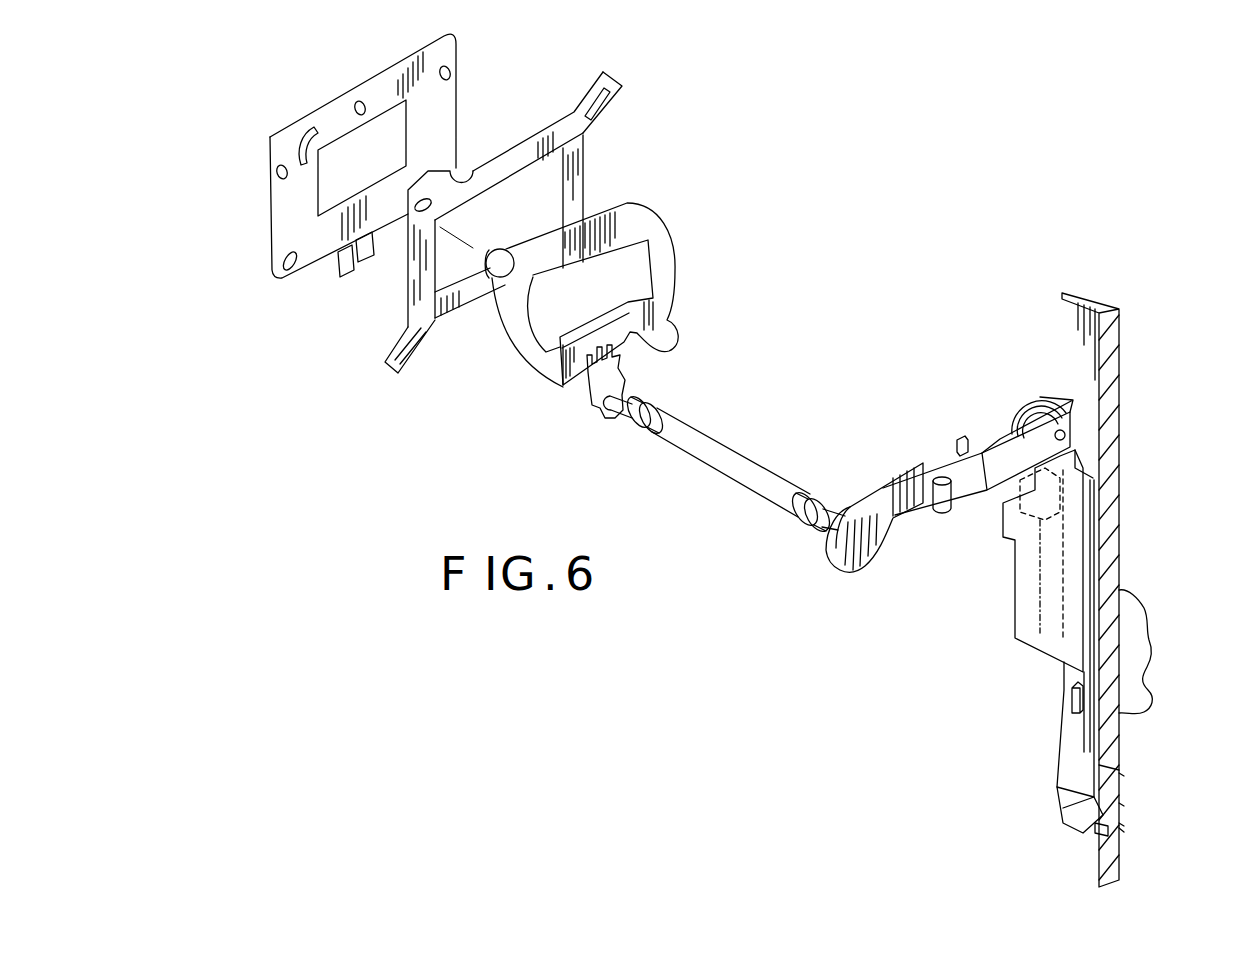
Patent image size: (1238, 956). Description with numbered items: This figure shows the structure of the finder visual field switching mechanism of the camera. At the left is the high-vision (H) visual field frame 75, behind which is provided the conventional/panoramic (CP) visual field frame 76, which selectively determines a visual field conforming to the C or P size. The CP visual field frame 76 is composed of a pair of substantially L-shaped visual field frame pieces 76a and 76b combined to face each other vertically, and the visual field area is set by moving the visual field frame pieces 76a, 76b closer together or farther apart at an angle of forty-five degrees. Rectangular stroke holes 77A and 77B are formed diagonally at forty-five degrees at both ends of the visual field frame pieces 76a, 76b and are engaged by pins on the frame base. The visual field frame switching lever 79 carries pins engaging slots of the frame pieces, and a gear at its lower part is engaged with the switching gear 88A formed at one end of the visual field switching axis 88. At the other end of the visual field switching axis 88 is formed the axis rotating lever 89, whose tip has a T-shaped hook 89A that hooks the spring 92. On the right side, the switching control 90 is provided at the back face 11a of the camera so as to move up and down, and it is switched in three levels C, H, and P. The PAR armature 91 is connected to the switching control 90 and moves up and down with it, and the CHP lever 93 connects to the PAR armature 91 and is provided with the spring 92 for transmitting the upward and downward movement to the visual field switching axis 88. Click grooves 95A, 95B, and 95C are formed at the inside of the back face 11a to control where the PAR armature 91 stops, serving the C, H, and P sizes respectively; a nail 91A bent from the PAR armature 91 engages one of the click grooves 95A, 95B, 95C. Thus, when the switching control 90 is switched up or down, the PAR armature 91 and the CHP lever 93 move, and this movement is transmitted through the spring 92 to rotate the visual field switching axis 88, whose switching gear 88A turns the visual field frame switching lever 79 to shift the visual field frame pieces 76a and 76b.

The high-vision (H) visual field frame 75 is at (283, 222).
The conventional/panoramic (CP) visual field frame 76 is at (463, 234).
The visual field frame piece 76a is at (522, 155).
The visual field frame piece 76b is at (462, 307).
The rectangular stroke hole 77A is at (397, 308).
The rectangular stroke hole 77B is at (600, 92).
The visual field frame switching lever 79 is at (650, 220).
The visual field switching axis 88 is at (733, 463).
The switching gear 88A is at (592, 398).
The axis rotating lever 89 is at (850, 503).
The T-shaped hook 89A is at (942, 512).
The spring 92 is at (950, 478).
The CHP lever 93 is at (1023, 578).
The back face of the camera 11a is at (1110, 350).
The switching control 90 is at (1132, 613).
The PAR armature 91 is at (1073, 743).
The nail 91A is at (1070, 813).
The click groove 95A is at (1127, 772).
The click groove 95B is at (1122, 830).
The click groove 95C is at (1093, 833).
The C size switching level C is at (1127, 775).
The H size switching level H is at (1127, 805).
The P size switching level P is at (1127, 826).